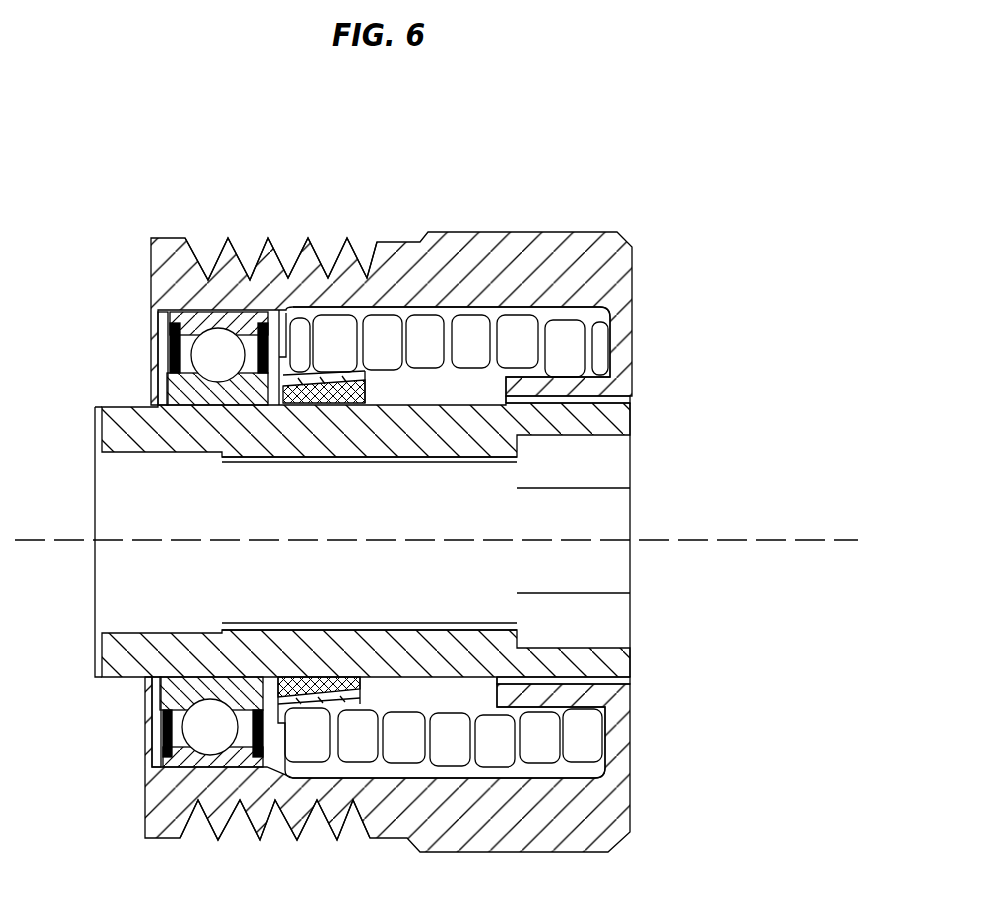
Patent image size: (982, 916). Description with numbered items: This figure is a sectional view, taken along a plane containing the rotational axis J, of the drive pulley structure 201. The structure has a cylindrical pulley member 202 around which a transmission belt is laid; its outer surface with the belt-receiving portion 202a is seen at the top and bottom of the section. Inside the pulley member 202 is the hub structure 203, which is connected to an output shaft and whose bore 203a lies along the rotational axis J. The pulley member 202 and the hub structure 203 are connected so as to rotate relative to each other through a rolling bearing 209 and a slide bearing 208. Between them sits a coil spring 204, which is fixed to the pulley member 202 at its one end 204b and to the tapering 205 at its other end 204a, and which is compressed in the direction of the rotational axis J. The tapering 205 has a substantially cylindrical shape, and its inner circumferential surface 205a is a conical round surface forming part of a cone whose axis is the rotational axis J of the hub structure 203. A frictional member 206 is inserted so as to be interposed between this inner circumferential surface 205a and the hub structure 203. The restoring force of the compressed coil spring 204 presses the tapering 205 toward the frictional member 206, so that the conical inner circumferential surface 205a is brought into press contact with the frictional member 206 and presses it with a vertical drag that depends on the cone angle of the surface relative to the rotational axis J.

The drive pulley structure 201 is at (636, 192).
The pulley member 202 is at (603, 263).
The belt groove portion 202a is at (218, 257).
The hub structure 203 is at (618, 424).
The inner bore surface 203a is at (502, 460).
The coil spring 204 is at (565, 348).
The other end of the coil spring 204a is at (300, 398).
The one end of the coil spring 204b is at (614, 345).
The tapering 205 is at (323, 372).
The inner circumferential surface 205a is at (357, 387).
The frictional member 206 is at (292, 383).
The slide bearing 208 is at (615, 402).
The rolling bearing 209 is at (170, 312).
The rotational axis J is at (762, 540).